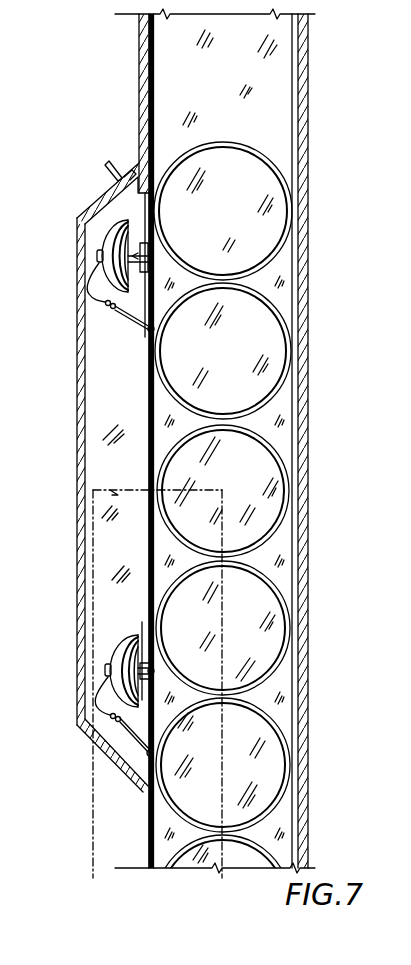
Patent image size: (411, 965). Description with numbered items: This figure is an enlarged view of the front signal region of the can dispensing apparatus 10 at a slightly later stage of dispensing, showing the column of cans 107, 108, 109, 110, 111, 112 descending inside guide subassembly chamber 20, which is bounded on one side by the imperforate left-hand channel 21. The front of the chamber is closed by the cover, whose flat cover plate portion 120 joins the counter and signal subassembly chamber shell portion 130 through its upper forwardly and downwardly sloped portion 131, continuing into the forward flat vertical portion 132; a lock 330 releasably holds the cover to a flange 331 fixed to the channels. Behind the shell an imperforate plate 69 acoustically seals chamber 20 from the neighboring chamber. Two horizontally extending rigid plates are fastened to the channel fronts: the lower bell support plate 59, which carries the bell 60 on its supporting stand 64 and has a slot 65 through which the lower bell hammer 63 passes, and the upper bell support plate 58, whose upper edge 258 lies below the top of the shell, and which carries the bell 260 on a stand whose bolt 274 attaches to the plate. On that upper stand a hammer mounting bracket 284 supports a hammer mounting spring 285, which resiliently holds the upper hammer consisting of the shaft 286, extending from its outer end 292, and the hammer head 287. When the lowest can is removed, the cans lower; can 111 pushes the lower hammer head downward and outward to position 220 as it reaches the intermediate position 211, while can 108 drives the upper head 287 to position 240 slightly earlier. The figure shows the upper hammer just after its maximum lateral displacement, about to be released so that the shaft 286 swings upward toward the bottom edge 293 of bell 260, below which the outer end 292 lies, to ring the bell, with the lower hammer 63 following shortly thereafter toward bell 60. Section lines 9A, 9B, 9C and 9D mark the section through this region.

The apparatus 10 is at (312, 105).
The guide subassembly chamber 20 is at (260, 118).
The imperforate left-hand channel 21 is at (226, 79).
The upper bell support plate 58 is at (154, 287).
The lower bell support plate 59 is at (153, 669).
The bell 60 is at (121, 650).
The bell hammer 63 is at (147, 752).
The supporting stand 64 is at (136, 652).
The slot 65 is at (150, 710).
The imperforate plate 69 is at (118, 548).
The can 107 is at (240, 219).
The can 108 is at (240, 349).
The can 109 is at (240, 473).
The can 110 is at (240, 627).
The can 111 is at (235, 763).
The can 112 is at (240, 863).
The cover plate portion 120 is at (139, 50).
The counter and signal subassembly chamber shell portion 130 is at (93, 487).
The upper forwardly and downwardly sloped portion 131 is at (97, 200).
The forward flat vertical portion 132 is at (78, 438).
The intermediate position of can 211 is at (300, 744).
The hammer head position 220 is at (143, 758).
The hammer head position 240 is at (132, 328).
The upper edge of plate 258 is at (144, 242).
The bell 260 is at (103, 252).
The bolt 274 is at (97, 258).
The hammer mounting bracket 284 is at (90, 295).
The hammer mounting spring 285 is at (106, 305).
The hammer shaft 286 is at (130, 320).
The hammer head 287 is at (152, 331).
The outer end of hammer shaft 292 is at (114, 310).
The bottom edge of bell 293 is at (130, 290).
The lock 330 is at (110, 168).
The flange 331 is at (128, 171).
The section line 9A is at (102, 480).
The section line 9B is at (239, 489).
The section line 9C is at (225, 889).
The section line 9D is at (98, 889).